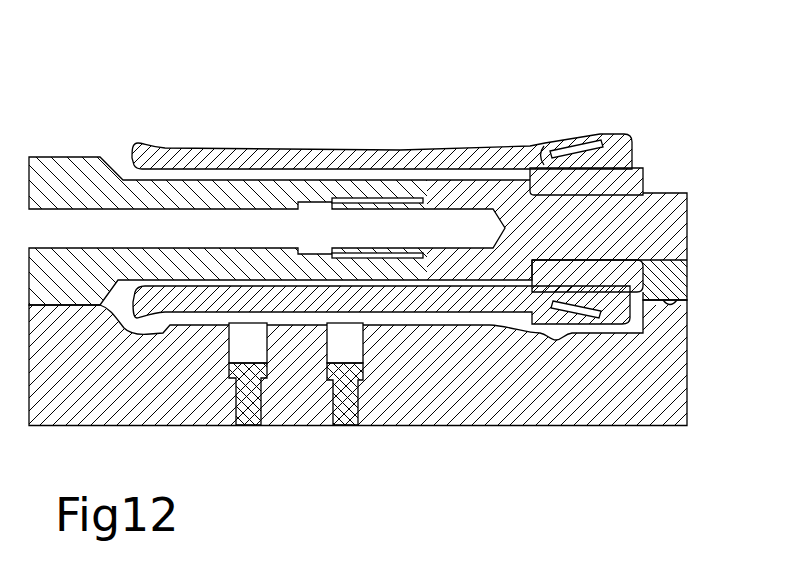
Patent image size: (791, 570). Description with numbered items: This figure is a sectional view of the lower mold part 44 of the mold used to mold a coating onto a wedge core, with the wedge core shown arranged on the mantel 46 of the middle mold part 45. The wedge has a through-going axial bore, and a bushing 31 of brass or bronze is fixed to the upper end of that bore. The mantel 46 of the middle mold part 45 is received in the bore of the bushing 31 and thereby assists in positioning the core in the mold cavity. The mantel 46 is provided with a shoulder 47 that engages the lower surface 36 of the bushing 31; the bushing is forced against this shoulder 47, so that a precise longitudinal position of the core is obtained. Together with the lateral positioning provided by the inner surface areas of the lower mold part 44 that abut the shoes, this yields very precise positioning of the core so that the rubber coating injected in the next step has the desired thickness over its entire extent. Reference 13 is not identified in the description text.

The spring contact 13 is at (423, 160).
The bushing 31 is at (600, 142).
The lower surface of the bushing 36 is at (527, 177).
The lower mold part 44 is at (632, 407).
The middle mold part 45 is at (63, 163).
The mantel 46 is at (662, 190).
The shoulder 47 is at (546, 187).